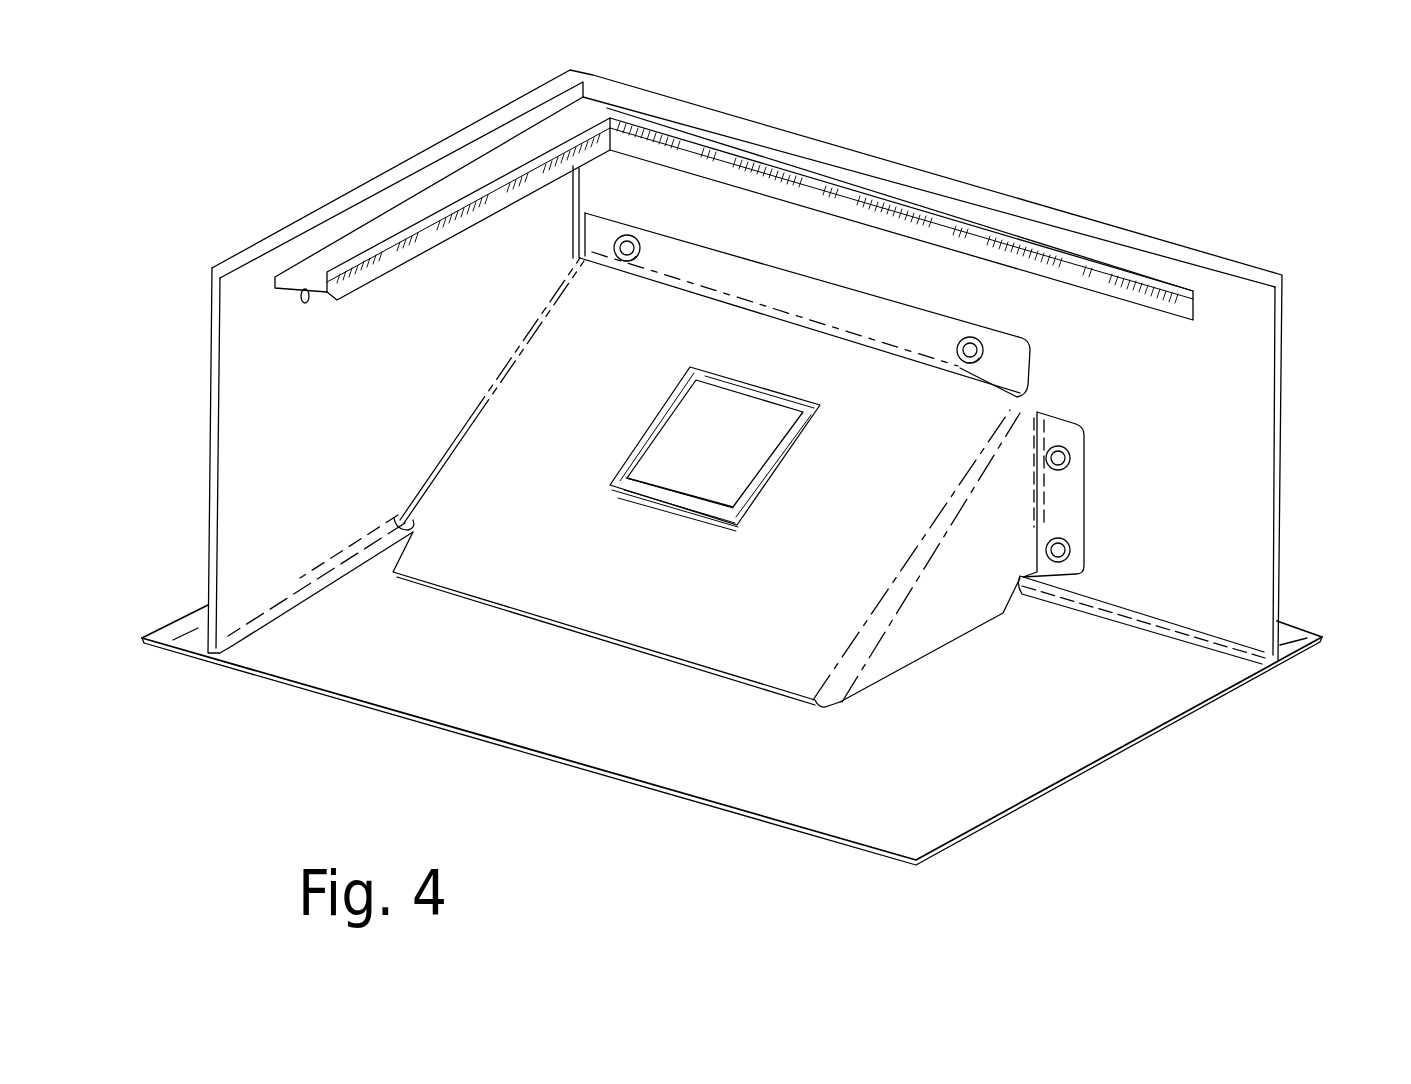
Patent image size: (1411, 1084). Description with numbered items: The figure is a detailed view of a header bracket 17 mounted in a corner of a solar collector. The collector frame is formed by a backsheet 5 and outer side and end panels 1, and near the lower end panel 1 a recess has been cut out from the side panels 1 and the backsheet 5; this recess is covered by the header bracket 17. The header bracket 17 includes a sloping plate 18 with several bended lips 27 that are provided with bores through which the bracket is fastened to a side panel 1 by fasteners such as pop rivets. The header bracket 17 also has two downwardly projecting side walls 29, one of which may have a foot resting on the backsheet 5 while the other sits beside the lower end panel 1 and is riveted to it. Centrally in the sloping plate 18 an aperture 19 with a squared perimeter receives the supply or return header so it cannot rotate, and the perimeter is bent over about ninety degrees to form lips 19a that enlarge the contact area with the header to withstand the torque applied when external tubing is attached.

The side and end panels 1 is at (217, 471).
The backsheet 5 is at (755, 790).
The header bracket 17 is at (503, 437).
The sloping plate 18 is at (564, 553).
The aperture 19 is at (731, 463).
The lips 19a is at (687, 495).
The bended lips 27 is at (998, 357).
The downwardly projecting side walls 29 is at (985, 560).